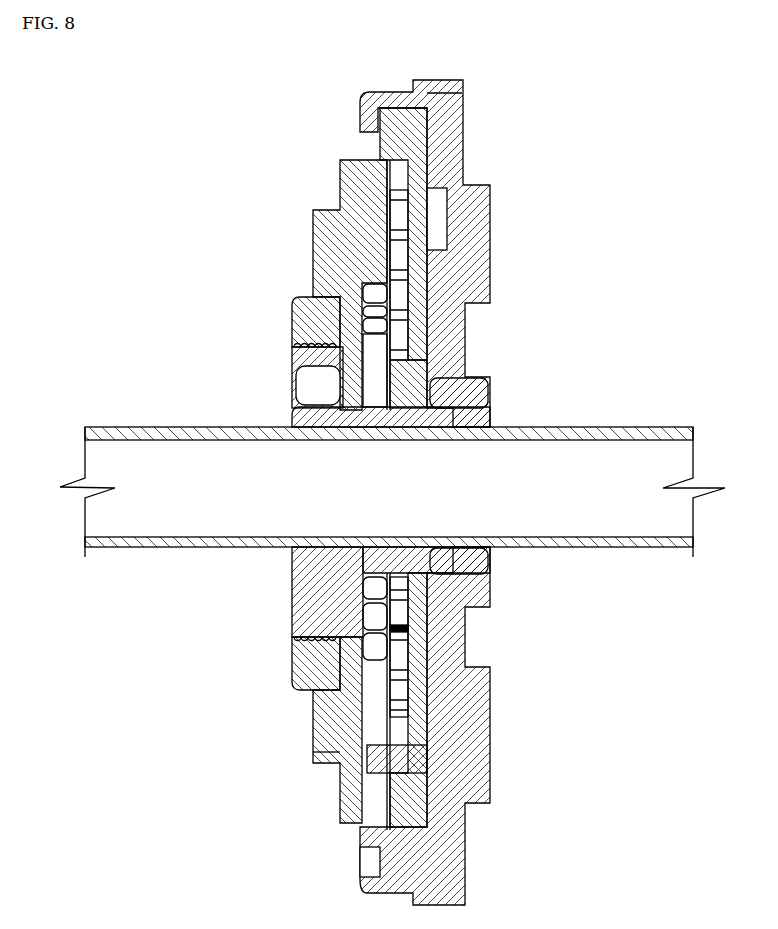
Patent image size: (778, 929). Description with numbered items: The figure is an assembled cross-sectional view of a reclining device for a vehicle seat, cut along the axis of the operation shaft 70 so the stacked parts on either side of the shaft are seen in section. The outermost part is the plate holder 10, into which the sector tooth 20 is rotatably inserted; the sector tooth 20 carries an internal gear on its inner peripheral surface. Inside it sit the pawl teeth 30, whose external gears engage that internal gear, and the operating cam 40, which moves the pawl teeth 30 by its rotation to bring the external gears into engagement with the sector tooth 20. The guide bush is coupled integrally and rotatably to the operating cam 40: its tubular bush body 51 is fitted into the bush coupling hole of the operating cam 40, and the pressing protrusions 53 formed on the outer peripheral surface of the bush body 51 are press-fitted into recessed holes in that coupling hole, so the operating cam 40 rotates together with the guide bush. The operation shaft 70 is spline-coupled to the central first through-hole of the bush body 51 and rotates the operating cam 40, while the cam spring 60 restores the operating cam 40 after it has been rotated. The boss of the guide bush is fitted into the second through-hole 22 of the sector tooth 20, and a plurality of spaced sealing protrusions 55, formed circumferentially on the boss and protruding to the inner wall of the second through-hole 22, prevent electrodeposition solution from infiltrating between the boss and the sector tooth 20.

The plate holder 10 is at (470, 242).
The sector tooth 20 is at (317, 266).
The second through-hole 22 is at (292, 345).
The pawl teeth 30 is at (440, 215).
The operating cam 40 is at (404, 378).
The bush body 51 is at (488, 553).
The pressing protrusions 53 is at (317, 362).
The sealing protrusion 55 is at (300, 333).
The cam spring 60 is at (382, 327).
The operation shaft 70 is at (627, 543).